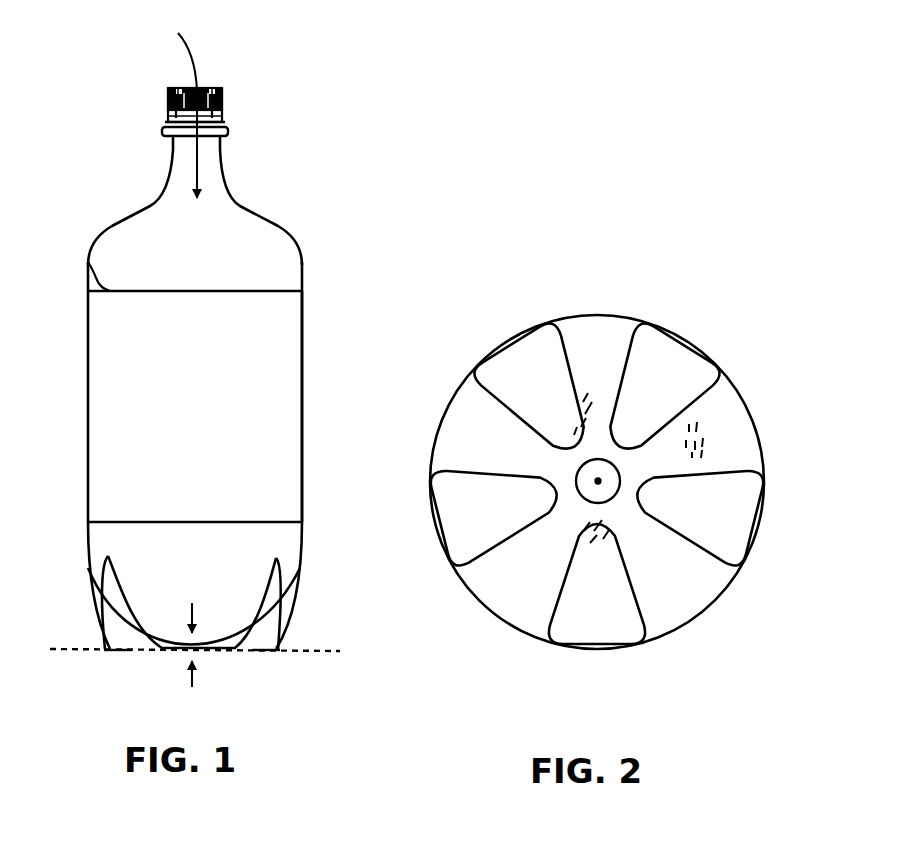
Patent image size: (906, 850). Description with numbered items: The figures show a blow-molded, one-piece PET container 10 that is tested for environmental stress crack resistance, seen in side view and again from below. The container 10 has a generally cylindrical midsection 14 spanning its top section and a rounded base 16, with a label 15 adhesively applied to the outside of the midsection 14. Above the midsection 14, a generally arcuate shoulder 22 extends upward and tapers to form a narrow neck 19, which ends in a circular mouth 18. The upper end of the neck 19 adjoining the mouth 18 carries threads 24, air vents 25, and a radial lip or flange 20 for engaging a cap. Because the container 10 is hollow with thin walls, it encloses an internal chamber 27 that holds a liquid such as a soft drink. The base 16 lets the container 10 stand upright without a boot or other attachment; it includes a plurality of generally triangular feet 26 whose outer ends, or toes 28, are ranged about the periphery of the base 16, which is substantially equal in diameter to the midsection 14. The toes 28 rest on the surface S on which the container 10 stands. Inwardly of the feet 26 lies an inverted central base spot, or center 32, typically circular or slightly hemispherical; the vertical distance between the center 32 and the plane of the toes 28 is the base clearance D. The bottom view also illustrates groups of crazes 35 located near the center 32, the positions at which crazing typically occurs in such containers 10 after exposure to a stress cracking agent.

In FIG. 1, the container 10 is at (334, 202).
In FIG. 1, the midsection 14 is at (290, 463).
In FIG. 1, the label 15 is at (93, 254).
In FIG. 1, the base 16 is at (285, 545).
In FIG. 2, the base 16 is at (617, 341).
In FIG. 1, the mouth 18 is at (214, 79).
In FIG. 1, the neck 19 is at (225, 163).
In FIG. 1, the radial lip (flange) 20 is at (228, 136).
In FIG. 1, the shoulder 22 is at (153, 213).
In FIG. 1, the threads 24 is at (224, 103).
In FIG. 1, the air vents 25 is at (172, 86).
In FIG. 1, the feet 26 is at (97, 603).
In FIG. 2, the feet 26 is at (715, 366).
In FIG. 1, the internal chamber 27 is at (175, 105).
In FIG. 1, the toes 28 is at (110, 655).
In FIG. 2, the toes 28 is at (520, 370).
In FIG. 2, the central base spot (center) 32 is at (590, 490).
In FIG. 2, the crazes 35 is at (538, 338).
In FIG. 1, the surface S is at (77, 646).
In FIG. 1, the base clearance D is at (190, 658).